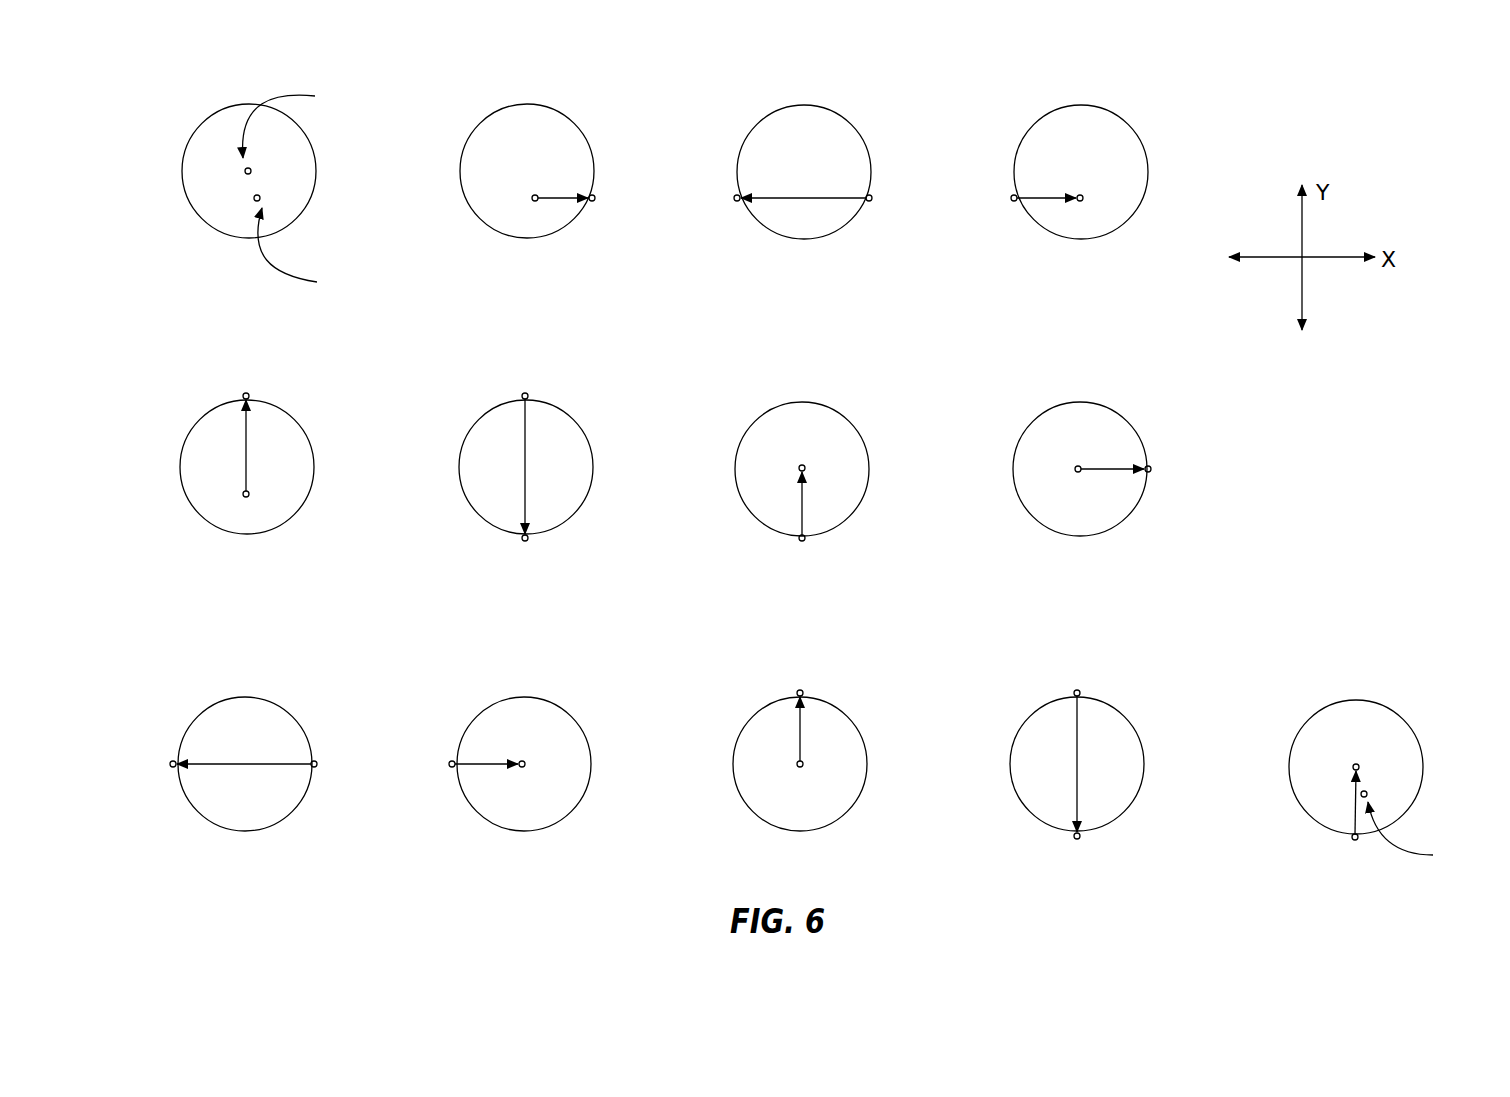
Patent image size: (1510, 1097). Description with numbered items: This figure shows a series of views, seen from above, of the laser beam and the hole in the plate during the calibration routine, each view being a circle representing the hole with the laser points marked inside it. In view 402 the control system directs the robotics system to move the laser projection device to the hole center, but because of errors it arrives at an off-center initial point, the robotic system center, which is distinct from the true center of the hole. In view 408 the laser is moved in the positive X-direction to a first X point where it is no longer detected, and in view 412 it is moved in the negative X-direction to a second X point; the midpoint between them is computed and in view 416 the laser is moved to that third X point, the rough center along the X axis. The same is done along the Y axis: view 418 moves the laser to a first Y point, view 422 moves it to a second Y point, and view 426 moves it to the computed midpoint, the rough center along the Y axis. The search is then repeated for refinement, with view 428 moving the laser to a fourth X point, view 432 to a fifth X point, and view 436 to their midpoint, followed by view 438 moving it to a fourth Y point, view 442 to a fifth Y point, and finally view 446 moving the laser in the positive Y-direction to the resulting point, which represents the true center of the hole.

The initial positioning step/view 402 is at (200, 125).
The positive X-direction move to X1 step/view 408 is at (582, 130).
The negative X-direction move to X2 step/view 412 is at (862, 133).
The positive X-direction move to X3 step/view 416 is at (1139, 133).
The positive Y-direction move to Y1 step/view 418 is at (295, 420).
The negative Y-direction move to Y2 step/view 422 is at (574, 420).
The positive Y-direction move to Y3 step/view 426 is at (853, 422).
The positive X-direction move to X4 step/view 428 is at (1133, 423).
The negative X-direction move to X5 step/view 432 is at (297, 715).
The positive X-direction move to X6 step/view 436 is at (574, 713).
The positive Y-direction move to Y4 step/view 438 is at (850, 718).
The negative Y-direction move to Y5 step/view 442 is at (1130, 720).
The positive Y-direction move to true center step/view 446 is at (1403, 715).